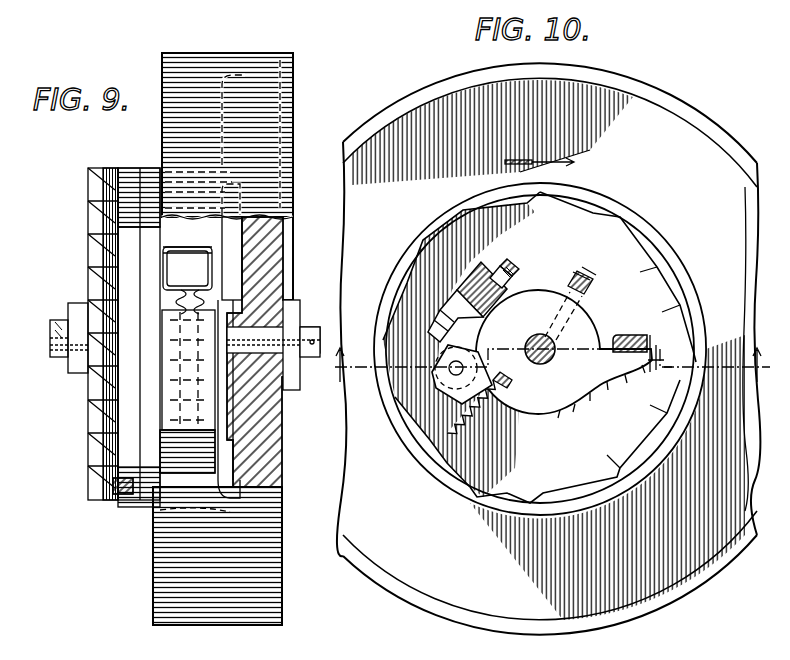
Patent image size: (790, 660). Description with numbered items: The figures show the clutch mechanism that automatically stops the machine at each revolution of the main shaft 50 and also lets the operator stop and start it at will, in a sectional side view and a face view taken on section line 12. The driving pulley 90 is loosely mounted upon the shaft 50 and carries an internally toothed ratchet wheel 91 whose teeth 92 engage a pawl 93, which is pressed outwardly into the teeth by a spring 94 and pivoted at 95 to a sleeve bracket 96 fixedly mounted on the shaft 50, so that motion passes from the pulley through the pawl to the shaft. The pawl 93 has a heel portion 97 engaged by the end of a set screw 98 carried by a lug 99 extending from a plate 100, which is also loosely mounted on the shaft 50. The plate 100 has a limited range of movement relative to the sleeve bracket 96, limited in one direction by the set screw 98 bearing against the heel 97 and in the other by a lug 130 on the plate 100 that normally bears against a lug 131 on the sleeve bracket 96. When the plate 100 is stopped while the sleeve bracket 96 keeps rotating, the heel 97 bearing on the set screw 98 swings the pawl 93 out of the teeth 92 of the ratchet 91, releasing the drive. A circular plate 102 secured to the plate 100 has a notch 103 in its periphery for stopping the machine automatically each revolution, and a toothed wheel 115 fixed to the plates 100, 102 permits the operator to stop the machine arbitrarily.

In FIG. 9, the driving pulley 90 is at (260, 56).
In FIG. 10, the driving pulley 90 is at (679, 110).
In FIG. 9, the internally toothed ratchet wheel 91 is at (185, 508).
In FIG. 10, the internally toothed ratchet wheel 91 is at (605, 190).
In FIG. 9, the teeth 92 is at (218, 482).
In FIG. 10, the teeth 92 is at (678, 307).
In FIG. 9, the pawl 93 is at (212, 435).
In FIG. 10, the pawl 93 is at (465, 462).
In FIG. 10, the spring 94 is at (482, 416).
In FIG. 10, the pivot 95 is at (446, 368).
In FIG. 10, the sleeve bracket 96 is at (564, 366).
In FIG. 9, the heel portion 97 is at (216, 308).
In FIG. 10, the heel portion 97 is at (440, 325).
In FIG. 9, the set screw 98 is at (196, 298).
In FIG. 10, the set screw 98 is at (467, 286).
In FIG. 9, the lug 99 is at (187, 280).
In FIG. 10, the lug 99 is at (486, 265).
In FIG. 9, the plate 100 is at (148, 168).
In FIG. 9, the circular plate 102 is at (122, 170).
In FIG. 9, the notch 103 is at (120, 508).
In FIG. 9, the toothed wheel 115 is at (95, 205).
In FIG. 10, the lug 130 is at (636, 336).
In FIG. 10, the lug 131 is at (655, 363).
In FIG. 9, the main shaft 50 is at (58, 333).
In FIG. 10, the main shaft 50 is at (536, 337).
In FIG. 10, the section line 12- 12 is at (548, 360).